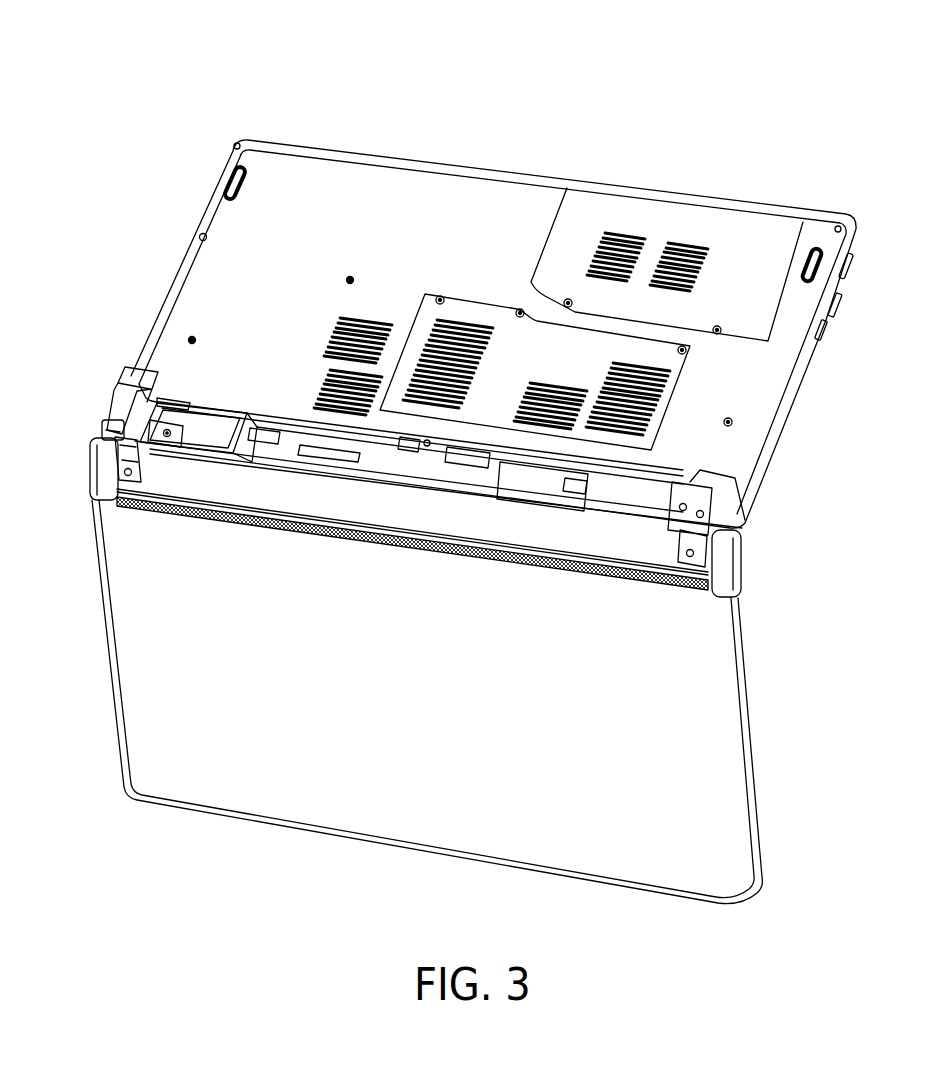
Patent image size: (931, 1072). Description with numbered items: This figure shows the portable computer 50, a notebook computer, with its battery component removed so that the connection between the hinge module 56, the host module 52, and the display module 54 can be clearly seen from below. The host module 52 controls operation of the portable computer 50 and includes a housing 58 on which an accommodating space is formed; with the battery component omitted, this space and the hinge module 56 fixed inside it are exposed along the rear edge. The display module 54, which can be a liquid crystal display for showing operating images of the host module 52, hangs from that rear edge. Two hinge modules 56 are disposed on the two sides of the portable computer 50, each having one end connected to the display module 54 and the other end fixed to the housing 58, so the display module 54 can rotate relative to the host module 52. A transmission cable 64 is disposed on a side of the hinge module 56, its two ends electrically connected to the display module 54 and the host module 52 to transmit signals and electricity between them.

The portable computer 50 is at (715, 108).
The host module 52 is at (815, 418).
The display module 54 is at (770, 712).
The hinge module 56 is at (163, 467).
The housing 58 is at (121, 407).
The transmission cable 64 is at (117, 423).